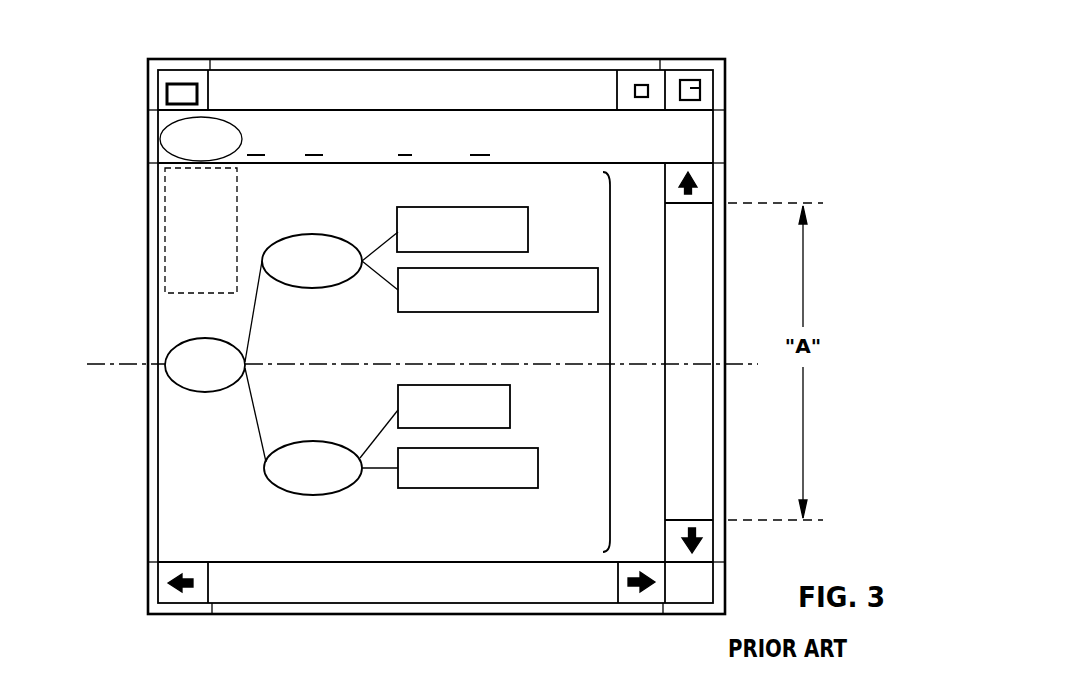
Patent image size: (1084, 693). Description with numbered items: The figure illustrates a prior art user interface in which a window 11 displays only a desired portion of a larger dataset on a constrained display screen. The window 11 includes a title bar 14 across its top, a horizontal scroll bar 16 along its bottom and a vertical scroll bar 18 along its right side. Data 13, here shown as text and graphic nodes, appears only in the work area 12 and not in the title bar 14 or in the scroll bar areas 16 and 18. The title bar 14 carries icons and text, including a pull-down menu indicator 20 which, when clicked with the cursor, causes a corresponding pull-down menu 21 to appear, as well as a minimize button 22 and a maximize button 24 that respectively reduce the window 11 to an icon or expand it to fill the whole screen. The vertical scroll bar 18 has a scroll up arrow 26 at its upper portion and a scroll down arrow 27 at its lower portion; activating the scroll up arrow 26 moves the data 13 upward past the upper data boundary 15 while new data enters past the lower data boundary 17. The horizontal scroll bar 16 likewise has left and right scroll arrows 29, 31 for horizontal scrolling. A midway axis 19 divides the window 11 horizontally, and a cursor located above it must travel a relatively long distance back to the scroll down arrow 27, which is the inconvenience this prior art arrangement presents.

The window 11 is at (618, 360).
The work area 12 is at (512, 537).
The data 13 is at (212, 394).
The title bar 14 is at (693, 128).
The upper data boundary 15 is at (650, 160).
The horizontal scroll bar 16 is at (582, 590).
The lower data boundary 17 is at (278, 563).
The vertical scroll bar 18 is at (707, 407).
The midway axis 19 is at (583, 366).
The pull-down menu indicator 20 is at (160, 157).
The pull-down menu 21 is at (163, 229).
The minimize button 22 is at (641, 85).
The maximize button 24 is at (700, 88).
The scroll up arrow 26 is at (707, 187).
The scroll down arrow 27 is at (707, 543).
The left scroll arrow 29 is at (182, 603).
The right scroll arrow 31 is at (652, 593).